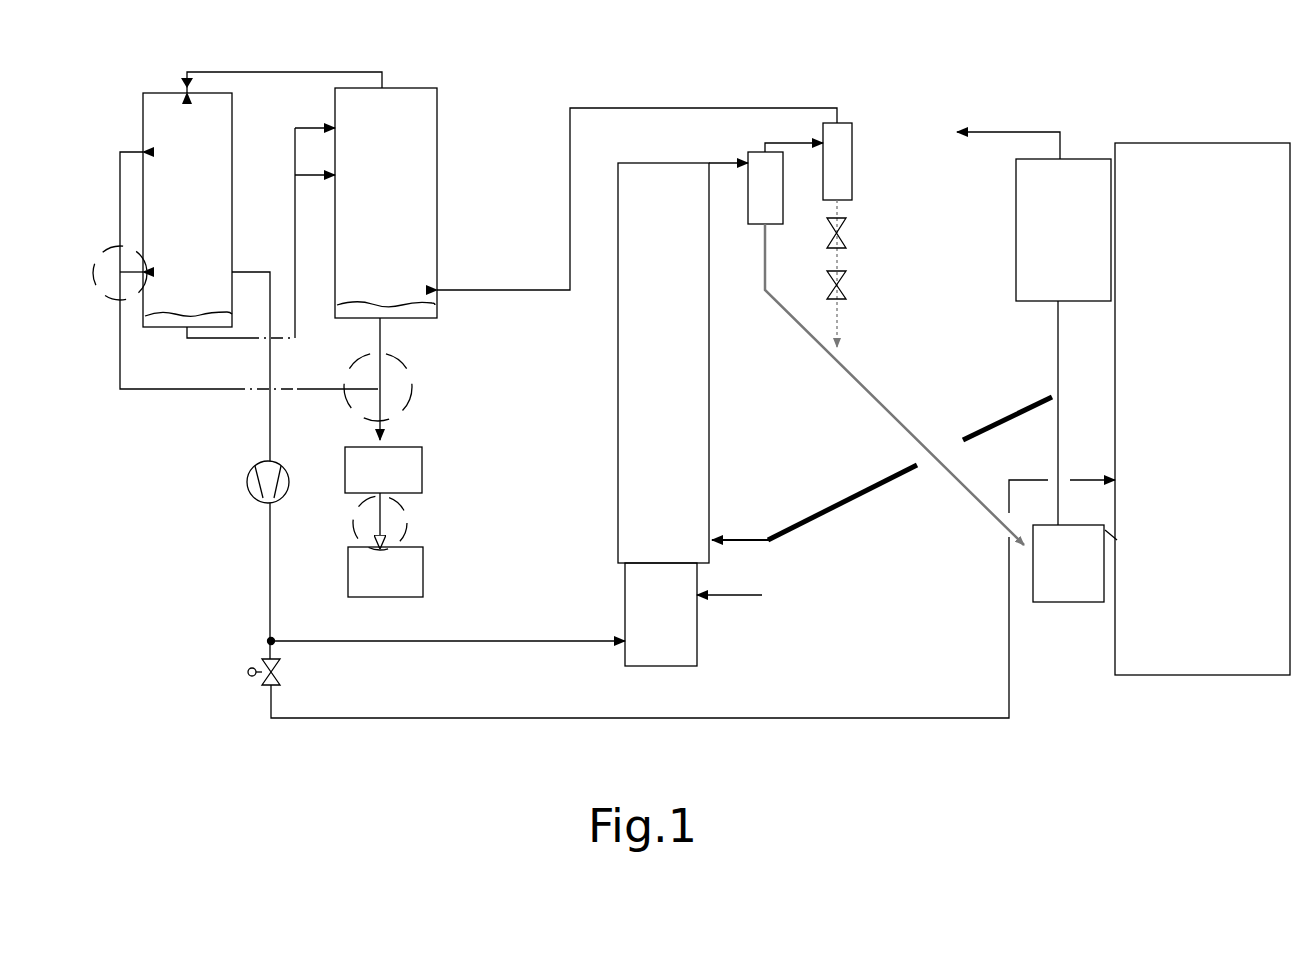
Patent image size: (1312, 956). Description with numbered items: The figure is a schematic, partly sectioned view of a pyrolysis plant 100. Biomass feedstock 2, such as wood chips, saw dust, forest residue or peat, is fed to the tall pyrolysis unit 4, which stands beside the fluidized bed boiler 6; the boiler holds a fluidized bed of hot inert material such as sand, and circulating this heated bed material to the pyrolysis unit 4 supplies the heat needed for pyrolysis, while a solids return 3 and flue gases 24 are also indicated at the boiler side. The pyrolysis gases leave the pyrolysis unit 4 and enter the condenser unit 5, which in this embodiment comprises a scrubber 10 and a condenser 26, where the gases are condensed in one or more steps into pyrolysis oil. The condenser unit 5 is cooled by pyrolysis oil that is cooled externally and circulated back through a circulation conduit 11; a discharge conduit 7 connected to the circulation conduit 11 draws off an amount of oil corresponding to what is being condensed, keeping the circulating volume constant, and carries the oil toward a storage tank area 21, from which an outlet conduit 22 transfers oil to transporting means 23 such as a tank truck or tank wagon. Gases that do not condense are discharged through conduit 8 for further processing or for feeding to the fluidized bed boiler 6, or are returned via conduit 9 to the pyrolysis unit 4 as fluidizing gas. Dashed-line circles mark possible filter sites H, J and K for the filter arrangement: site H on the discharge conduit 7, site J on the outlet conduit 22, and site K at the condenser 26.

The pyrolysis plant 100 is at (268, 782).
The condenser unit 5 is at (468, 60).
The condenser 26 is at (205, 190).
The scrubber 10 is at (406, 190).
The filter site K is at (127, 263).
The circulation conduit 11 is at (160, 392).
The filter site H is at (407, 380).
The discharge conduit for pyrolysis oil 7 is at (392, 415).
The storage tank area 21 is at (408, 473).
The outlet conduit 22 is at (356, 523).
The filter site J is at (398, 520).
The transporting means 23 is at (408, 577).
The conduit for returning non-condensable gas 9 is at (447, 637).
The conduit for non-condensable gas 8 is at (503, 715).
The pyrolysis unit 4 is at (647, 418).
The feedstock 2 is at (743, 595).
The solids return 3 is at (868, 390).
The flue gases 24 is at (1008, 132).
The fluidized bed boiler 6 is at (1222, 360).